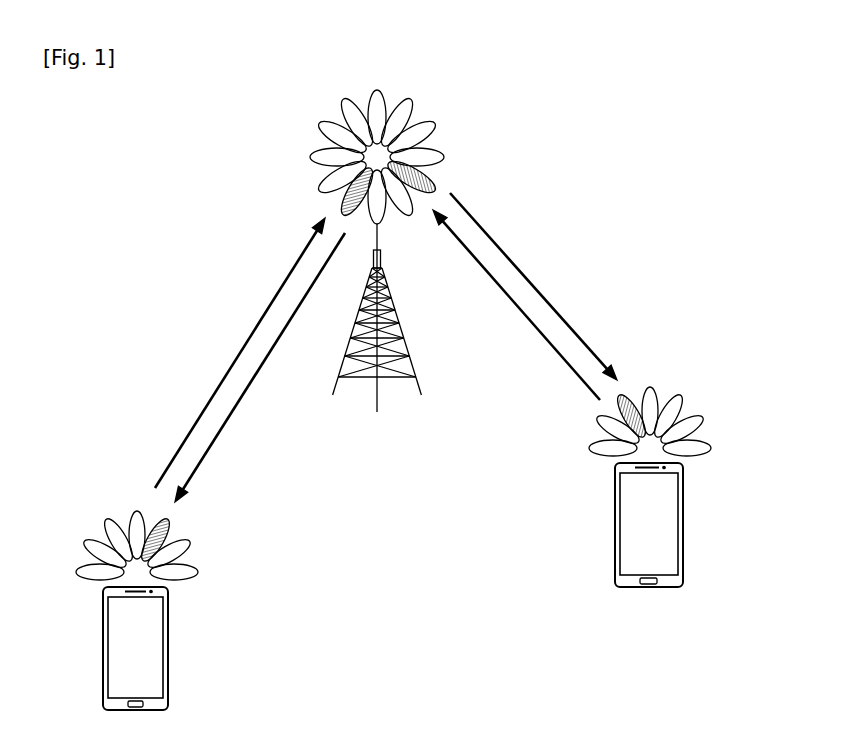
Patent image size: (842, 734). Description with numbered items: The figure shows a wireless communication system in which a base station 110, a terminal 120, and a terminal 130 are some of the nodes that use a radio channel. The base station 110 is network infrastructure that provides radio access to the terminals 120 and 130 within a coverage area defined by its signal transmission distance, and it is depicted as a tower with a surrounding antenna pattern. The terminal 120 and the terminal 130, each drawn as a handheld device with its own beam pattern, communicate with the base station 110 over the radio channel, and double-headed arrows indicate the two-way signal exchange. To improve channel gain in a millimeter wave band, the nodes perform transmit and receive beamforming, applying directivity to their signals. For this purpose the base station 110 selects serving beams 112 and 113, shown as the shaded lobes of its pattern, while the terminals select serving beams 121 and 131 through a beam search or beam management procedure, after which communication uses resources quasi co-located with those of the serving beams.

The base station 110 is at (397, 317).
The serving beam 112 is at (343, 211).
The serving beam 113 is at (421, 182).
The terminal 120 is at (169, 619).
The serving beam 121 is at (168, 521).
The terminal 130 is at (684, 495).
The serving beam 131 is at (624, 412).